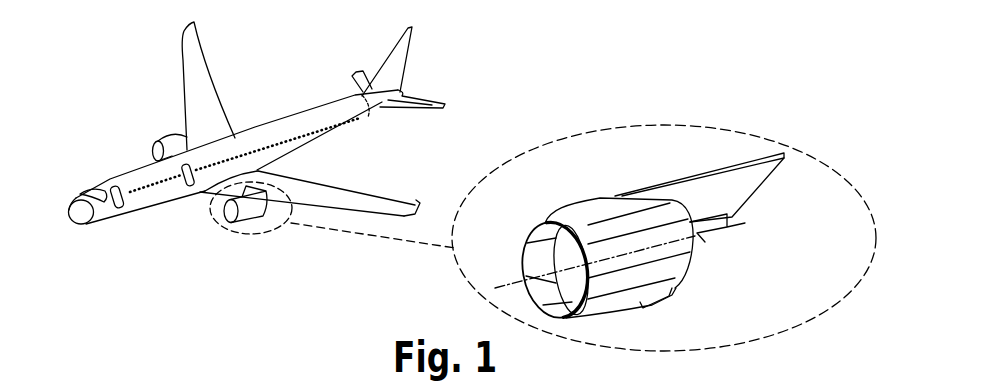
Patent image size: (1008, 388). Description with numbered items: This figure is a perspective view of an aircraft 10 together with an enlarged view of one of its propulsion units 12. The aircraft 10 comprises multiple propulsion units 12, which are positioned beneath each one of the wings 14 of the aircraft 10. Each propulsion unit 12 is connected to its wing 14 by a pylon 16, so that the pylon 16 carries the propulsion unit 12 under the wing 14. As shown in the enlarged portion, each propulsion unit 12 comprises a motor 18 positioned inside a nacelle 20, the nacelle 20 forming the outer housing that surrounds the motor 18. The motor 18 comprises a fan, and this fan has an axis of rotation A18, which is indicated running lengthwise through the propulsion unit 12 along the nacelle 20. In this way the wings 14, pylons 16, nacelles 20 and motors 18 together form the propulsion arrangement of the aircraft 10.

The aircraft 10 is at (137, 100).
The propulsion unit 12 is at (251, 219).
The wing 14 is at (199, 83).
The pylon 16 is at (710, 191).
The motor 18 is at (703, 245).
The nacelle 20 is at (675, 280).
The axis of rotation A18 is at (508, 285).